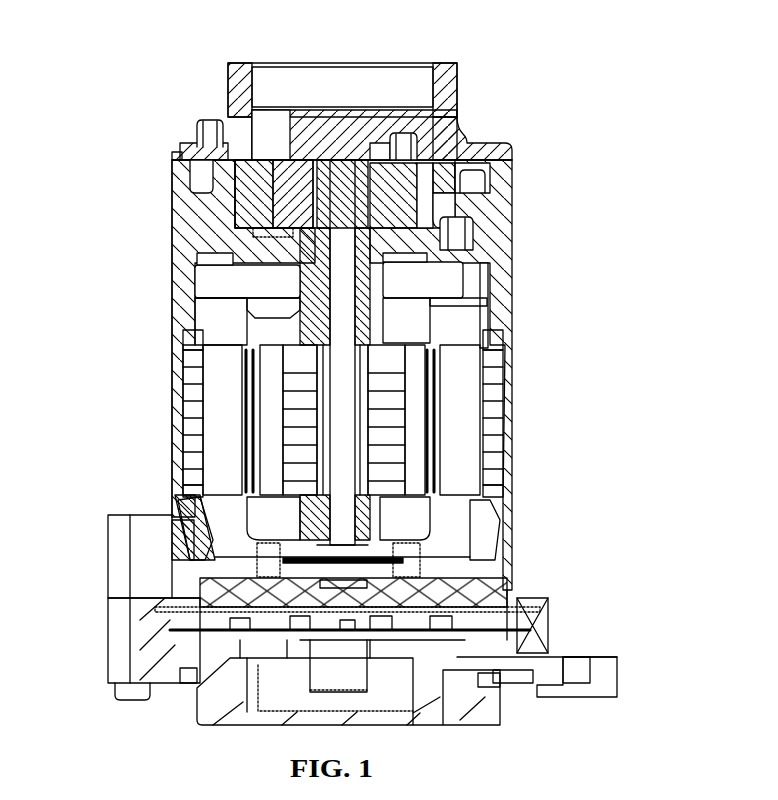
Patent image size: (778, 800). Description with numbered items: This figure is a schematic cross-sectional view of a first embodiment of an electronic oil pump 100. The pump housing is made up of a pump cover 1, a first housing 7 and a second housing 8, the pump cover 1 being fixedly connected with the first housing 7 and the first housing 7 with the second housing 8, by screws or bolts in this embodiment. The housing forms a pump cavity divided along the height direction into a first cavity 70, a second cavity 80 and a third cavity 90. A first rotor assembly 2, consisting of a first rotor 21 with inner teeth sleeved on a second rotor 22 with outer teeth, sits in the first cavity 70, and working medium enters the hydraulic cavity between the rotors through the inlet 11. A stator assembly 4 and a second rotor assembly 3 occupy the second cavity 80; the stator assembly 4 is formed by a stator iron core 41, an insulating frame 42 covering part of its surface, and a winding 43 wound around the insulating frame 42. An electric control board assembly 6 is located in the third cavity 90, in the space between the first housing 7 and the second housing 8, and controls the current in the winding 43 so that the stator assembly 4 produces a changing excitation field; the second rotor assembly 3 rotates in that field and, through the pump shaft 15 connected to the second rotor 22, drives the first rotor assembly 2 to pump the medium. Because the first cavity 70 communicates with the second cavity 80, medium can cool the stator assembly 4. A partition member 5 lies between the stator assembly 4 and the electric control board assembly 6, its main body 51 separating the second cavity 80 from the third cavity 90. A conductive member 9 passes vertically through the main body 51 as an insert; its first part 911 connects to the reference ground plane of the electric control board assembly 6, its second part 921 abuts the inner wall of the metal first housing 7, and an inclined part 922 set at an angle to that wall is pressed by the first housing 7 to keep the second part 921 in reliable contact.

The electronic oil pump 100 is at (208, 68).
The pump cover 1 is at (440, 147).
The inlet 11 is at (275, 137).
The first rotor assembly 2 is at (443, 178).
The first rotor 21 is at (432, 198).
The second rotor 22 is at (398, 190).
The first cavity 70 is at (448, 238).
The second cavity 80 is at (428, 285).
The pump shaft 15 is at (325, 388).
The second rotor assembly 3 is at (300, 420).
The first housing 7 is at (200, 527).
The stator assembly 4 is at (419, 397).
The stator iron core 41 is at (495, 440).
The insulating frame 42 is at (595, 374).
The winding 43 is at (461, 407).
The main body 51 is at (477, 537).
The partition member 5 is at (462, 587).
The third cavity 90 is at (510, 620).
The electric control board assembly 6 is at (165, 643).
The second housing 8 is at (495, 665).
The conductive member 9 is at (180, 588).
The first part 911 is at (200, 622).
The second part 921 is at (195, 547).
The inclined part 922 is at (185, 545).